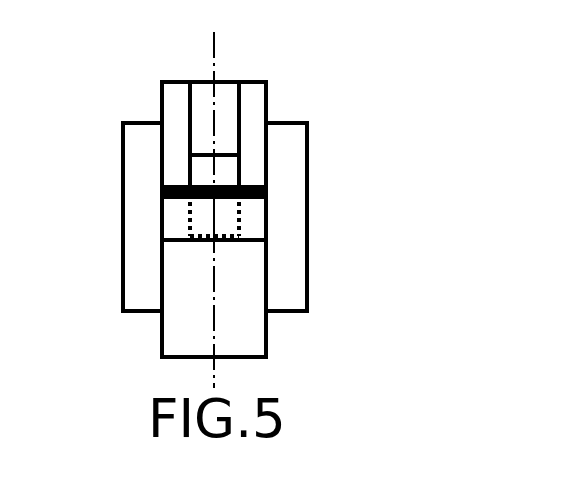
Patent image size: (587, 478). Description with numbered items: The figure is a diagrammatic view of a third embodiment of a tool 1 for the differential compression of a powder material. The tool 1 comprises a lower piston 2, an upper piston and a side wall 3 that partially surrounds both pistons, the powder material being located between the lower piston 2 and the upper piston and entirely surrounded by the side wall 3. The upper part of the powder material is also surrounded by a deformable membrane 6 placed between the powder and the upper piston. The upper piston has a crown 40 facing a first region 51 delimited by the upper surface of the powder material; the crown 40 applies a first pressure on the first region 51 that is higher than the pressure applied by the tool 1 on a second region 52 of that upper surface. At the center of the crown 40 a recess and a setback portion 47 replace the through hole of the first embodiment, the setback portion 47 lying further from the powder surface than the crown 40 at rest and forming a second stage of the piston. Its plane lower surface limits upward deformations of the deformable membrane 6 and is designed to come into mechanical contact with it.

The tool 1 is at (311, 86).
The lower piston 2 is at (180, 337).
The side wall 3 is at (135, 177).
The deformable membrane 6 is at (267, 192).
The crown 40 is at (172, 105).
The setback portion 47 is at (223, 96).
The first region 51 is at (253, 226).
The second region 52 is at (198, 215).